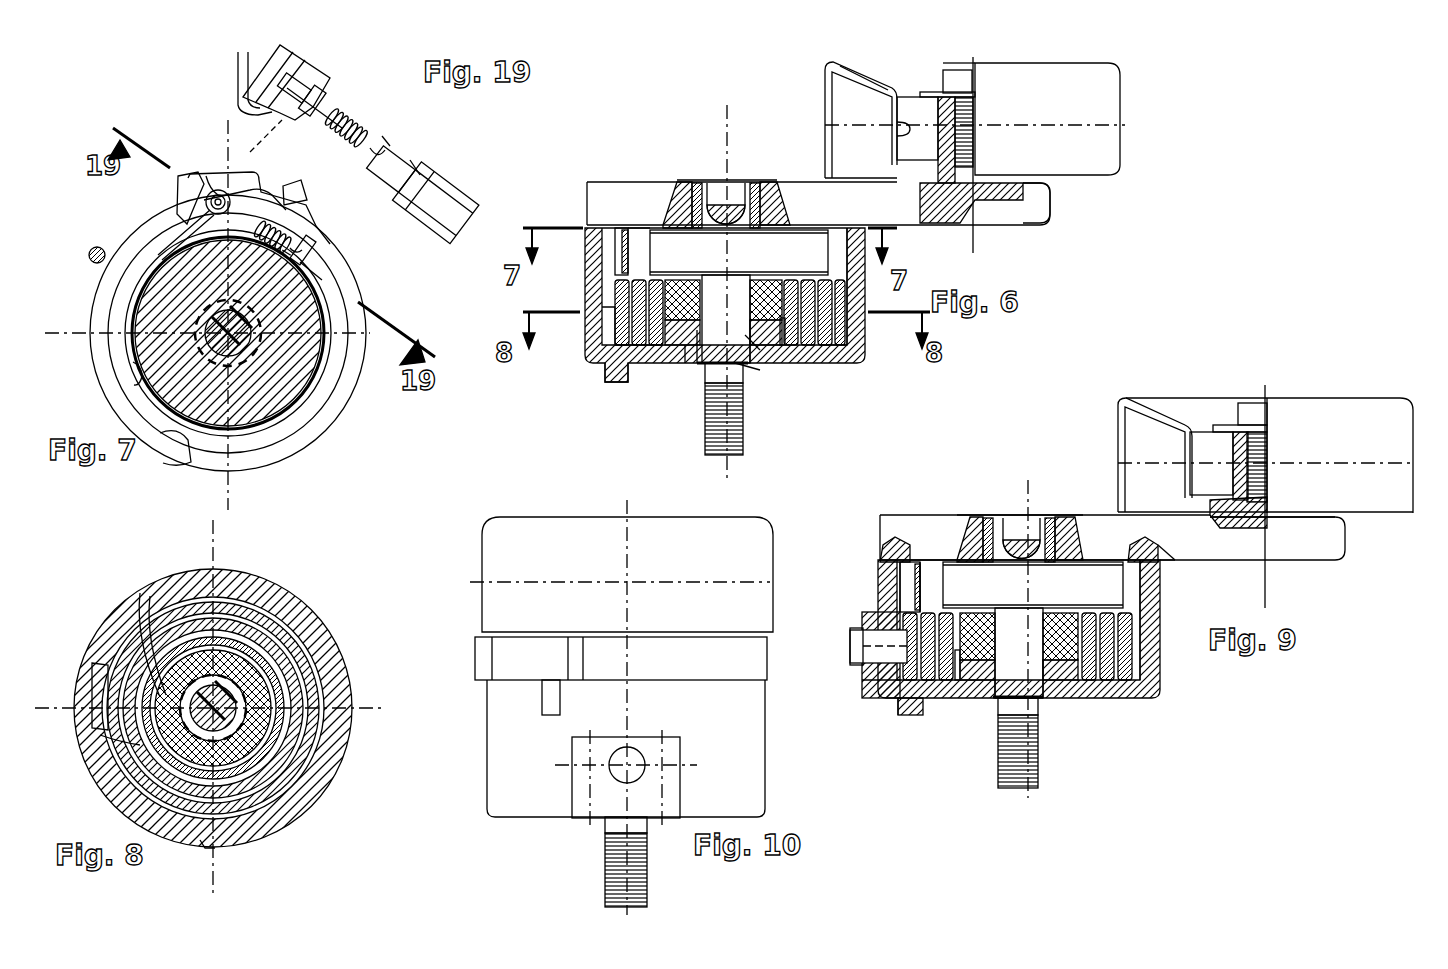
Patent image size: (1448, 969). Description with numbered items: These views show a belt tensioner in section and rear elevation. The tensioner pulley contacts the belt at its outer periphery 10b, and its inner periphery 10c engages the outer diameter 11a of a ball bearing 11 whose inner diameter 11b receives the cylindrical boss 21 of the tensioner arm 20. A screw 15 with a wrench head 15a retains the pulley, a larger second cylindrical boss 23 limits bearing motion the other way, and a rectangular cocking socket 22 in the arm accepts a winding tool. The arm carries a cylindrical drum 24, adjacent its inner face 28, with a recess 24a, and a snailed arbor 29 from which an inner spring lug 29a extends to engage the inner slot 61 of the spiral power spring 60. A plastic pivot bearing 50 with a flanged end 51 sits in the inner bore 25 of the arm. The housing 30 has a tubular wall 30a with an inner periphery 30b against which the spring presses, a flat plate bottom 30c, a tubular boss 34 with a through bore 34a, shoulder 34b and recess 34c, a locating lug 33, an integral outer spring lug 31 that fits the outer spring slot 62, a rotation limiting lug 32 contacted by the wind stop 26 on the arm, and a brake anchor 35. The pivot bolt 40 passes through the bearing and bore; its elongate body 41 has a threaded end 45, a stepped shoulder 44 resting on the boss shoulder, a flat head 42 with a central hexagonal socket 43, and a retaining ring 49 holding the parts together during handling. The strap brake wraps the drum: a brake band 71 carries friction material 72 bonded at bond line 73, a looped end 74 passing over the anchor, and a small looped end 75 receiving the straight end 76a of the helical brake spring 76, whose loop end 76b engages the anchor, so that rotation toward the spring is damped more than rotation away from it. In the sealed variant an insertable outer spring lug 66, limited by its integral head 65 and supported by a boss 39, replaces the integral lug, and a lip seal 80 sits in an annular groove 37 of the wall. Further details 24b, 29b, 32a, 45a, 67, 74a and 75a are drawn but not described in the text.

In FIG. 6, the outer periphery 10b is at (828, 102).
In FIG. 6, the inner periphery 10c is at (875, 85).
In FIG. 6, the ball bearing 11 is at (935, 165).
In FIG. 6, the outer diameter 11a is at (898, 130).
In FIG. 6, the inner diameter 11b is at (955, 225).
In FIG. 6, the screw 15 is at (965, 200).
In FIG. 6, the head 15a is at (945, 90).
In FIG. 6, the tensioner arm 20 is at (1050, 192).
In FIG. 7, the cylindrical boss 21 is at (89, 253).
In FIG. 6, the cylindrical boss 21 is at (965, 95).
In FIG. 6, the rectangular cocking socket 22 is at (1045, 220).
In FIG. 9, the second cylindrical boss 23 is at (880, 545).
In FIG. 6, the cylindrical drum 24 is at (640, 252).
In FIG. 7, the recess 24a is at (305, 300).
In FIG. 6, the drum recess 24b is at (640, 225).
In FIG. 6, the inner bore 25 is at (655, 198).
In FIG. 9, the inner bore 25 is at (1060, 695).
In FIG. 7, the wind stop 26 is at (297, 180).
In FIG. 6, the inner face 28 is at (618, 232).
In FIG. 9, the inner face 28 is at (1170, 563).
In FIG. 6, the snailed shaped arbor 29 is at (805, 345).
In FIG. 8, the snailed shaped arbor 29 is at (248, 770).
In FIG. 6, the inner spring lug 29a is at (660, 350).
In FIG. 8, the inner spring lug 29a is at (140, 595).
In FIG. 8, the spring notch 29b is at (213, 847).
In FIG. 7, the housing 30 is at (305, 432).
In FIG. 6, the housing 30 is at (725, 305).
In FIG. 8, the housing 30 is at (266, 582).
In FIG. 7, the tubular wall 30a is at (322, 276).
In FIG. 6, the tubular wall 30a is at (850, 282).
In FIG. 9, the tubular wall 30a is at (1150, 640).
In FIG. 7, the inner periphery 30b is at (180, 462).
In FIG. 6, the flat plate bottom 30c is at (805, 352).
In FIG. 6, the integral outer spring lug 31 is at (600, 322).
In FIG. 7, the rotation limiting lug 32 is at (212, 178).
In FIG. 19, the rotation limiting lug 32 is at (238, 52).
In FIG. 7, the pivot pin 32a is at (226, 190).
In FIG. 19, the pivot pin 32a is at (240, 98).
In FIG. 6, the locating lug 33 is at (615, 385).
In FIG. 10, the locating lug 33 is at (628, 840).
In FIG. 9, the locating lug 33 is at (905, 718).
In FIG. 6, the tubular boss 34 is at (785, 350).
In FIG. 6, the through bore 34a is at (775, 355).
In FIG. 9, the shoulder 34b is at (1000, 702).
In FIG. 6, the recess 34c is at (682, 390).
In FIG. 7, the brake anchor 35 is at (258, 152).
In FIG. 9, the annular groove 37 is at (900, 580).
In FIG. 10, the boss 39 is at (568, 800).
In FIG. 9, the boss 39 is at (862, 615).
In FIG. 6, the pivot bolt 40 is at (727, 455).
In FIG. 8, the pivot bolt 40 is at (240, 698).
In FIG. 6, the elongate body 41 is at (755, 330).
In FIG. 6, the flat head 42 is at (700, 180).
In FIG. 6, the central hexagonal socket 43 is at (725, 183).
In FIG. 6, the stepped shoulder 44 is at (697, 380).
In FIG. 6, the threaded end 45 is at (742, 400).
In FIG. 9, the threaded shaft end 45a is at (1040, 700).
In FIG. 6, the retaining ring 49 is at (758, 345).
In FIG. 6, the plastic pivot bearing 50 is at (695, 370).
In FIG. 8, the plastic pivot bearing 50 is at (285, 648).
In FIG. 6, the flanged end 51 is at (697, 200).
In FIG. 6, the spiral power spring 60 is at (818, 325).
In FIG. 8, the spiral power spring 60 is at (166, 596).
In FIG. 9, the spiral power spring 60 is at (962, 695).
In FIG. 8, the inner slot 61 is at (100, 750).
In FIG. 8, the outer spring slot 62 is at (92, 665).
In FIG. 9, the outer spring slot 62 is at (897, 702).
In FIG. 10, the integral head 65 is at (645, 755).
In FIG. 9, the integral head 65 is at (850, 640).
In FIG. 9, the insertable outer spring lug 66 is at (858, 664).
In FIG. 9, the boss face 67 is at (880, 677).
In FIG. 7, the brake band 71 is at (125, 320).
In FIG. 9, the brake band 71 is at (905, 560).
In FIG. 7, the friction material 72 is at (134, 378).
In FIG. 9, the friction material 72 is at (918, 560).
In FIG. 7, the bond line 73 is at (128, 345).
In FIG. 7, the looped end 74 is at (178, 188).
In FIG. 19, the looped end 74 is at (308, 96).
In FIG. 7, the pawl arm 74a is at (163, 212).
In FIG. 7, the looped end 75 is at (312, 245).
In FIG. 19, the looped end 75 is at (392, 140).
In FIG. 7, the pin head 75a is at (330, 268).
In FIG. 19, the pin head 75a is at (418, 155).
In FIG. 7, the brake spring 76 is at (288, 228).
In FIG. 19, the brake spring 76 is at (345, 112).
In FIG. 7, the straight end 76a is at (300, 245).
In FIG. 19, the straight end 76a is at (386, 135).
In FIG. 7, the loop end 76b is at (210, 176).
In FIG. 9, the lip seal 80 is at (1175, 560).